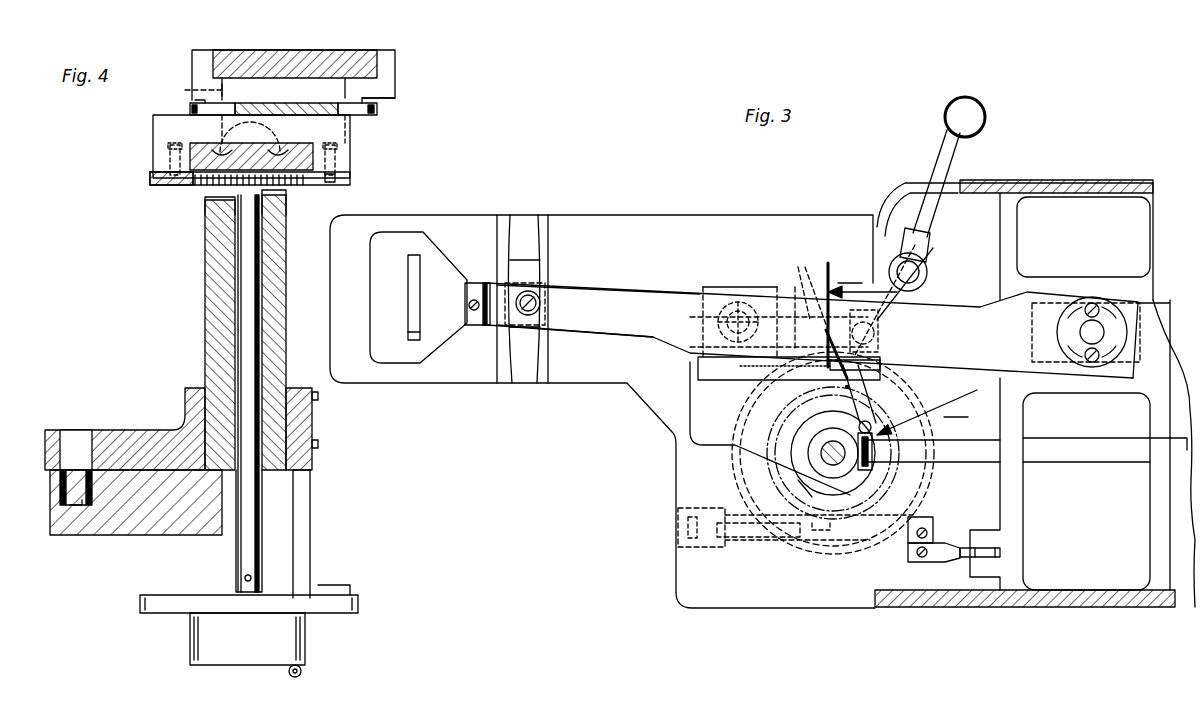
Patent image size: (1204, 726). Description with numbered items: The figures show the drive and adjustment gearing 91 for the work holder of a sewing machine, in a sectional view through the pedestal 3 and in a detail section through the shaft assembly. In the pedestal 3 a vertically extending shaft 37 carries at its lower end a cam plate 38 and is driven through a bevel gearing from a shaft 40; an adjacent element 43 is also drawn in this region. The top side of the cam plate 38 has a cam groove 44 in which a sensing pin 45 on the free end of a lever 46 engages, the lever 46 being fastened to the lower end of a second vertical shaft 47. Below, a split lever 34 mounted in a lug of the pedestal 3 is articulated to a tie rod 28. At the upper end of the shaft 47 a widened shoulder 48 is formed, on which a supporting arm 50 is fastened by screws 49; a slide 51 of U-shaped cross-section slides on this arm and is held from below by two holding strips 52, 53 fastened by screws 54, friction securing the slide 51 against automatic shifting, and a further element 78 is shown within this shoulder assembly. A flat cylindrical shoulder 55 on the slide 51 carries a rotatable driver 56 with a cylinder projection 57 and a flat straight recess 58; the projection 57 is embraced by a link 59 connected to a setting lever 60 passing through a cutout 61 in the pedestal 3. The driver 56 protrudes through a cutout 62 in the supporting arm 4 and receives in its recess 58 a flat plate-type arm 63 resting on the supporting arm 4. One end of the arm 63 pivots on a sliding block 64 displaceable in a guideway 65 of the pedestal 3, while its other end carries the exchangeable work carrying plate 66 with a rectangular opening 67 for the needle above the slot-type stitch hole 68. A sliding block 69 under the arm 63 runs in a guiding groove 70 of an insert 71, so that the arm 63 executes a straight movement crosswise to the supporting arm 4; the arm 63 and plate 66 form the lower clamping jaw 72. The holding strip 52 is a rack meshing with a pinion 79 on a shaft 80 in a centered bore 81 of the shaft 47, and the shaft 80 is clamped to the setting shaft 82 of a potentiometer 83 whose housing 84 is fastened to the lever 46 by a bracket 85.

In FIG. 3, the pedestal 3 is at (950, 608).
In FIG. 3, the supporting arm 4 is at (612, 213).
In FIG. 3, the tie rod 28 is at (930, 535).
In FIG. 3, the split lever 34 is at (945, 556).
In FIG. 3, the shaft 37 is at (848, 460).
In FIG. 4, the cam plate 38 is at (183, 532).
In FIG. 3, the cam plate 38 is at (920, 480).
In FIG. 3, the shaft 40 is at (1090, 460).
In FIG. 3, the drive shaft 43 is at (937, 455).
In FIG. 4, the cam groove 44 is at (85, 505).
In FIG. 3, the cam groove 44 is at (814, 498).
In FIG. 4, the sensing pin 45 is at (74, 505).
In FIG. 3, the sensing pin 45 is at (917, 425).
In FIG. 4, the lever 46 is at (140, 440).
In FIG. 3, the lever 46 is at (870, 407).
In FIG. 4, the shaft 47 is at (207, 285).
In FIG. 3, the shaft 47 is at (822, 345).
In FIG. 4, the widened shoulder 48 is at (200, 215).
In FIG. 4, the screws 49 is at (250, 137).
In FIG. 4, the supporting arm 50 is at (178, 165).
In FIG. 3, the supporting arm 50 is at (880, 368).
In FIG. 4, the slide 51 is at (165, 130).
In FIG. 3, the slide 51 is at (728, 372).
In FIG. 4, the holding strip 52 is at (158, 180).
In FIG. 3, the holding strip 52 is at (778, 373).
In FIG. 4, the holding strip 53 is at (350, 180).
In FIG. 4, the screws 54 is at (165, 188).
In FIG. 4, the flat cylindrical shoulder 55 is at (185, 90).
In FIG. 3, the flat cylindrical shoulder 55 is at (703, 330).
In FIG. 4, the driver 56 is at (395, 90).
In FIG. 3, the driver 56 is at (737, 287).
In FIG. 4, the cylinder projection 57 is at (195, 101).
In FIG. 4, the flat straight recess 58 is at (375, 50).
In FIG. 4, the link 59 is at (365, 110).
In FIG. 3, the link 59 is at (810, 293).
In FIG. 3, the setting lever 60 is at (930, 253).
In FIG. 3, the cutout 61 is at (905, 190).
In FIG. 3, the cutout 62 is at (779, 280).
In FIG. 4, the arm 63 is at (295, 50).
In FIG. 3, the arm 63 is at (617, 310).
In FIG. 3, the sliding block 64 is at (1143, 325).
In FIG. 3, the guideway 65 is at (1150, 305).
In FIG. 3, the work carrying plate 66 is at (448, 332).
In FIG. 3, the rectangular opening 67 is at (418, 302).
In FIG. 3, the stitch hole 68 is at (412, 322).
In FIG. 3, the sliding block 69 is at (527, 275).
In FIG. 3, the guiding groove 70 is at (528, 362).
In FIG. 3, the insert 71 is at (500, 374).
In FIG. 3, the lower clamping jaw 72 is at (640, 282).
In FIG. 4, the rack block 78 is at (303, 160).
In FIG. 4, the pinion 79 is at (290, 212).
In FIG. 4, the shaft 80 is at (250, 542).
In FIG. 4, the centered bore 81 is at (238, 360).
In FIG. 4, the setting shaft 82 is at (258, 594).
In FIG. 4, the potentiometer 83 is at (183, 662).
In FIG. 4, the housing 84 is at (328, 613).
In FIG. 4, the bracket 85 is at (312, 562).
In FIG. 4, the gearing 91 is at (150, 233).
In FIG. 3, the gearing 91 is at (878, 363).